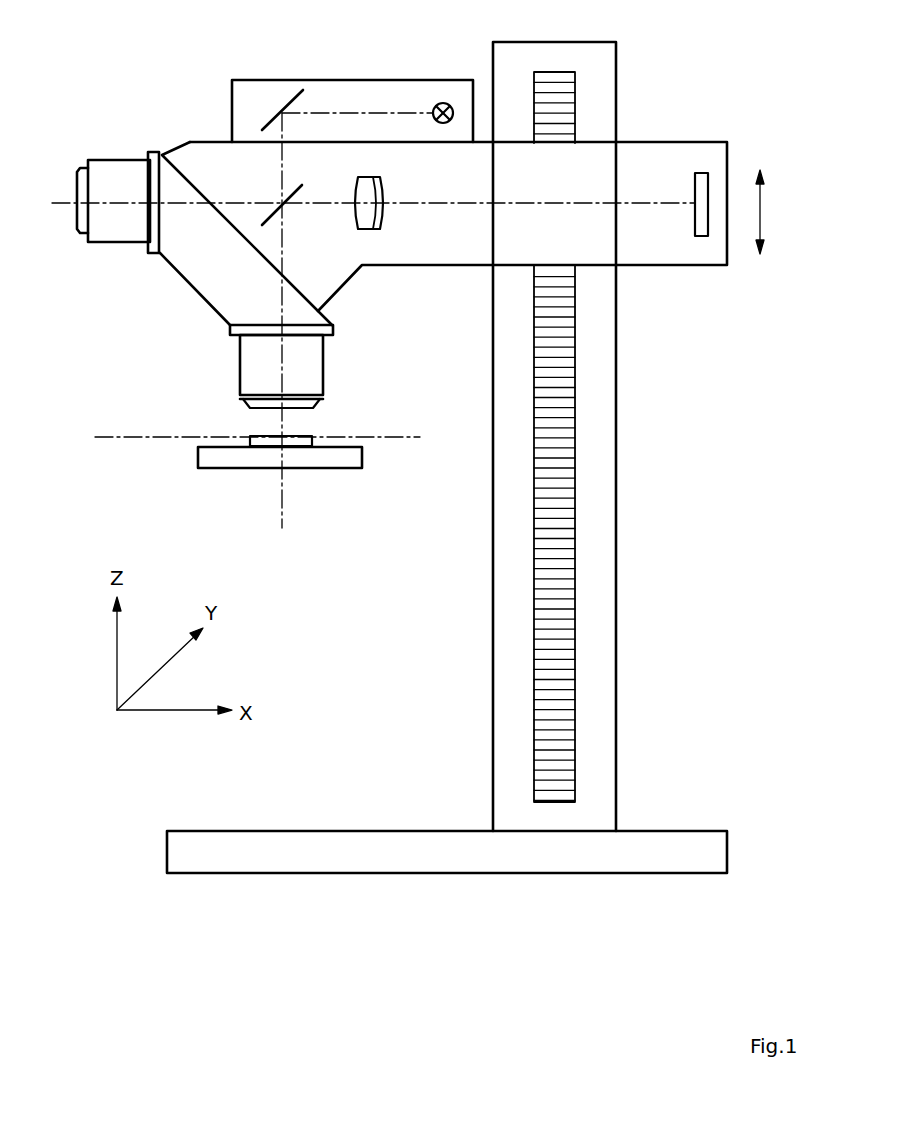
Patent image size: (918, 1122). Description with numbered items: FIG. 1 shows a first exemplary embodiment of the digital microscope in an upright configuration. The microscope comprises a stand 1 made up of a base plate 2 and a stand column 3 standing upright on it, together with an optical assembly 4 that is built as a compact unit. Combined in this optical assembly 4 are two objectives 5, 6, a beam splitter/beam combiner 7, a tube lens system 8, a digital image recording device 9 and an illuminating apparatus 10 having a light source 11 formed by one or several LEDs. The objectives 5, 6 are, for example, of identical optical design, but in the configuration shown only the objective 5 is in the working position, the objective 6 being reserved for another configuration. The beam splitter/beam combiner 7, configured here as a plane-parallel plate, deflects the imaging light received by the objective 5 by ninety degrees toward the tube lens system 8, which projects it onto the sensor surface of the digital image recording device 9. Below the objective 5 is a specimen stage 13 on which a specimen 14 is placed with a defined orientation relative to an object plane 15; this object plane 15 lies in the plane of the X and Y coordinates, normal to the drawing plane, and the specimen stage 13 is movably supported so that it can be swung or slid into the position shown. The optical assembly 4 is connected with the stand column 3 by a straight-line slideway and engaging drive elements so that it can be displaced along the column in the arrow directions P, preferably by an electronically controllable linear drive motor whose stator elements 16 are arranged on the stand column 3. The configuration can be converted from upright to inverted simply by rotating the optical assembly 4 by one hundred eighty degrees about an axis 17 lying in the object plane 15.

The stand 1 is at (410, 445).
The base plate 2 is at (432, 842).
The stand column 3 is at (600, 487).
The optical assembly 4 is at (183, 95).
The objective 5 is at (310, 348).
The objective 6 is at (115, 175).
The beam splitter/beam combiner 7 is at (273, 210).
The tube lens system 8 is at (385, 193).
The digital image recording device 9 is at (695, 178).
The illuminating apparatus 10 is at (258, 90).
The light source 11 is at (438, 102).
The specimen stage 13 is at (310, 467).
The specimen 14 is at (258, 435).
The object plane 15 is at (253, 436).
The stator elements 16 is at (562, 645).
The axis 17 is at (403, 437).